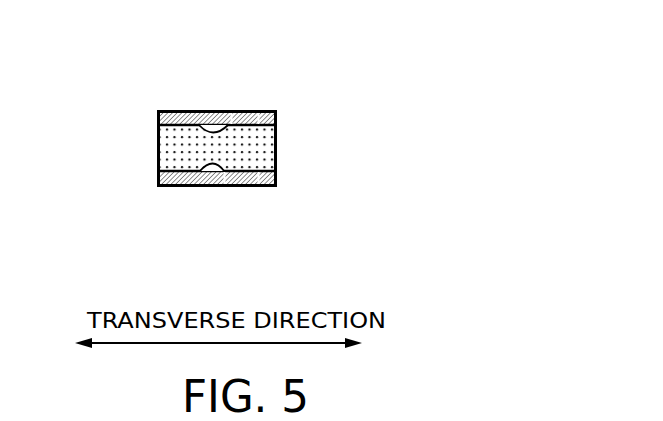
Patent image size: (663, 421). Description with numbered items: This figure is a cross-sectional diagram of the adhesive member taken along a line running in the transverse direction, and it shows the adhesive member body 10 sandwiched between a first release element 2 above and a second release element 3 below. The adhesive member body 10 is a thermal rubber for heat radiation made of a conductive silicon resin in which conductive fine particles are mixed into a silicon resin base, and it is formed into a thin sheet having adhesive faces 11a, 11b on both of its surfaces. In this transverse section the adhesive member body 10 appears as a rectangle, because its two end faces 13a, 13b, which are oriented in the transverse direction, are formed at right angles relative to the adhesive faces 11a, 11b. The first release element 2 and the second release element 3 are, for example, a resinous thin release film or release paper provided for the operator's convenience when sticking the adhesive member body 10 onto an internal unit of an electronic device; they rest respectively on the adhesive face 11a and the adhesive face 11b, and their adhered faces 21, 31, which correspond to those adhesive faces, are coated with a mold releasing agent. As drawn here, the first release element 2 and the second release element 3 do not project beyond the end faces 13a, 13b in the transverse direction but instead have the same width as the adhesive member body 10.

The first release element 2 is at (169, 96).
The second release element 3 is at (169, 203).
The adhesive member body 10 is at (277, 148).
The adhesive face 11a is at (260, 110).
The adhesive face 11b is at (257, 187).
The end face 13a is at (157, 147).
The end face 13b is at (277, 132).
The adhered face 21 is at (227, 110).
The adhered face 31 is at (225, 187).